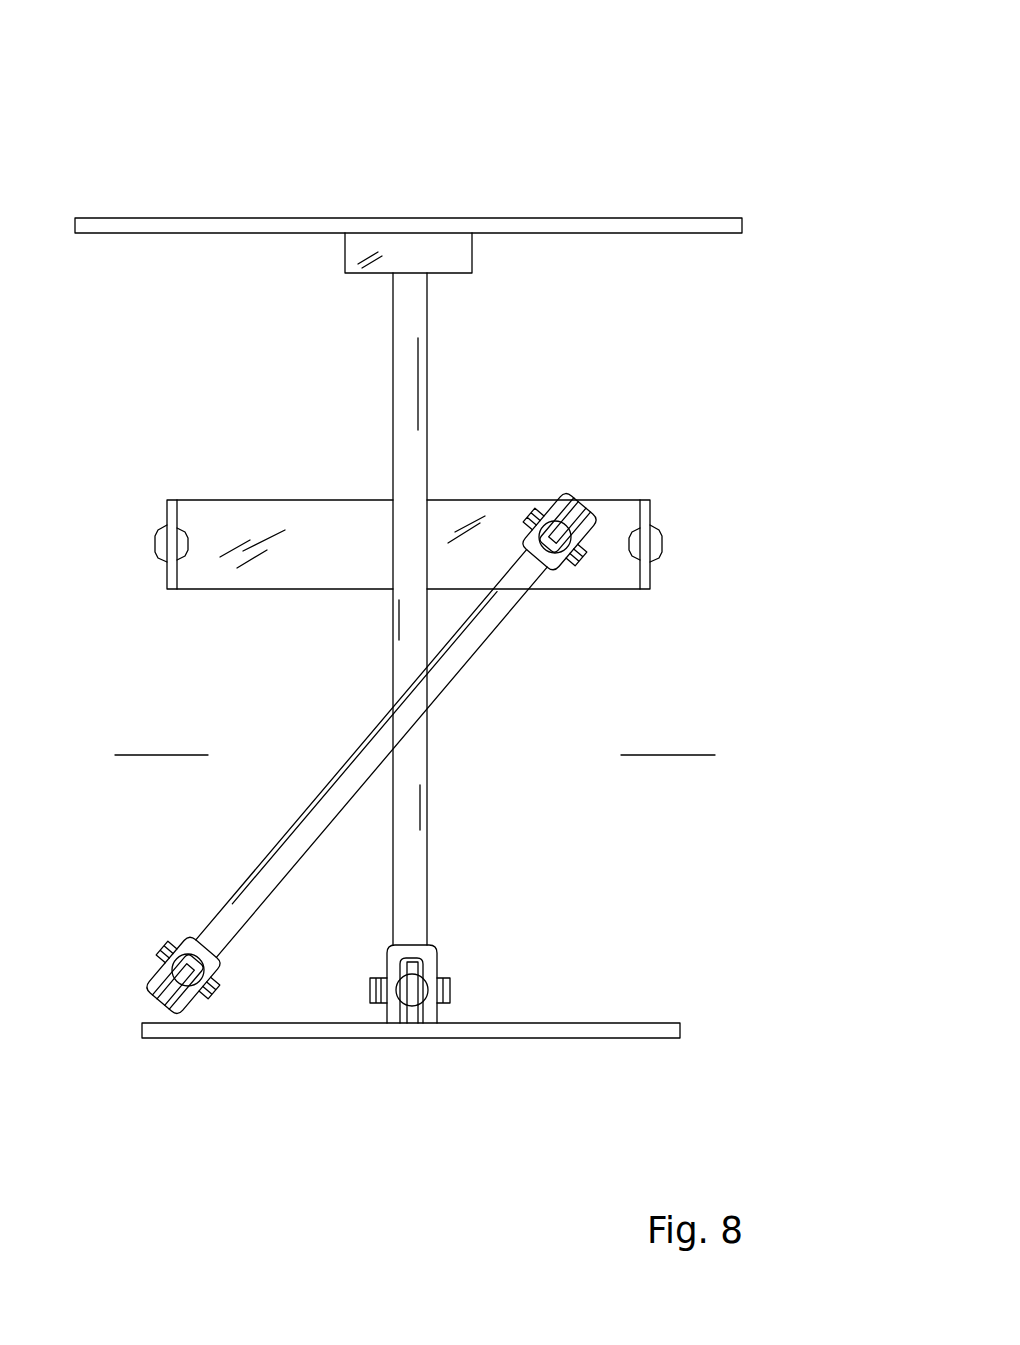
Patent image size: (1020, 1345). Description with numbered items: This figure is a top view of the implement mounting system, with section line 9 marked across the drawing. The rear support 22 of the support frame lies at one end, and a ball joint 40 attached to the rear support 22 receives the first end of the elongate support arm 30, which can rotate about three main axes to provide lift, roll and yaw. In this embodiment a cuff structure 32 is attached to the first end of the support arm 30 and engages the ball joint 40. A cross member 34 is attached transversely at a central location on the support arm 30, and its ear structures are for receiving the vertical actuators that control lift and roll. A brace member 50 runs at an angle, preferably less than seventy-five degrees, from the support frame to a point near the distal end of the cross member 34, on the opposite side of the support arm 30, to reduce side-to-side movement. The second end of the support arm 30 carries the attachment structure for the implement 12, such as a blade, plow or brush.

The implement 12 is at (214, 228).
The rear support 22 is at (216, 1030).
The support arm 30 is at (417, 463).
The cuff structure 32 is at (390, 1000).
The cross member 34 is at (230, 514).
The ball joint 40 is at (432, 966).
The brace member 50 is at (436, 692).
The section line 9- 9 is at (162, 738).